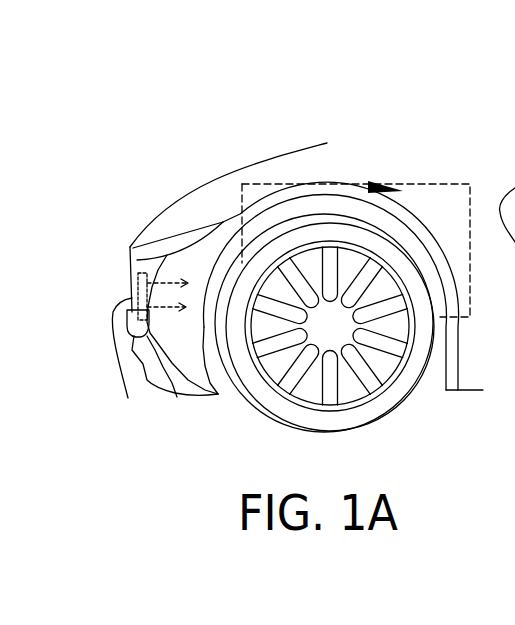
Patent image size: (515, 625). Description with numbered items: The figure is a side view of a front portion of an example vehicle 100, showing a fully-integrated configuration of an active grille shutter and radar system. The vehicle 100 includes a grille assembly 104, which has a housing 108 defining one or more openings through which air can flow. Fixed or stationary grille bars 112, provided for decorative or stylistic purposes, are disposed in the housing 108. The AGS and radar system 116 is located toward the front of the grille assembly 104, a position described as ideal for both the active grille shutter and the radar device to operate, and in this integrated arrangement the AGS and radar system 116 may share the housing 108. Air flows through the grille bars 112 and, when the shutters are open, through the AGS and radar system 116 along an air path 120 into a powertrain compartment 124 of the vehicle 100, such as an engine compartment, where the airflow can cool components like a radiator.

The vehicle 100 is at (250, 103).
The grille assembly 104 is at (110, 250).
The housing 108 is at (177, 397).
The grille bars 112 is at (218, 394).
The AGS and radar system 116 is at (121, 371).
The air path 120 is at (284, 208).
The powertrain compartment 124 is at (430, 200).